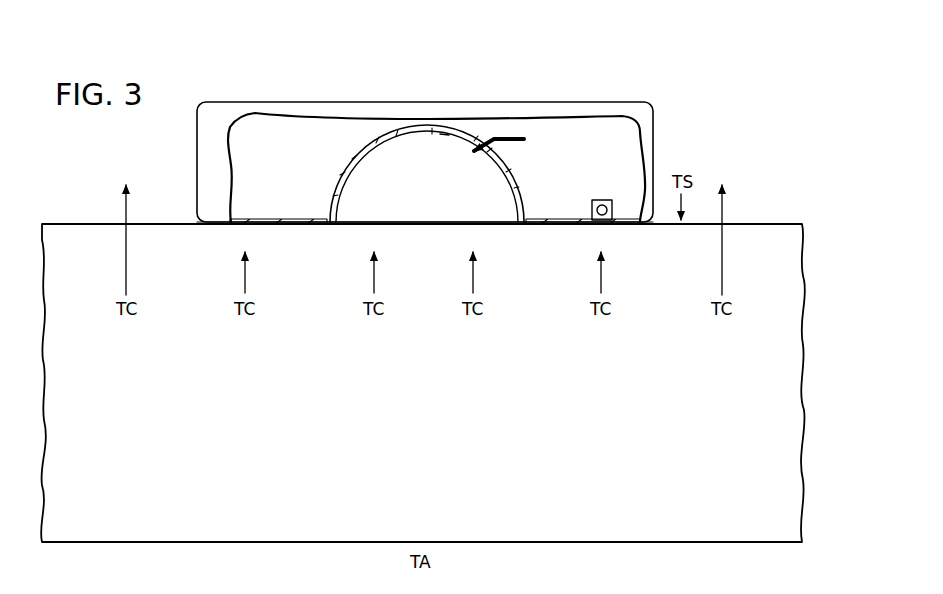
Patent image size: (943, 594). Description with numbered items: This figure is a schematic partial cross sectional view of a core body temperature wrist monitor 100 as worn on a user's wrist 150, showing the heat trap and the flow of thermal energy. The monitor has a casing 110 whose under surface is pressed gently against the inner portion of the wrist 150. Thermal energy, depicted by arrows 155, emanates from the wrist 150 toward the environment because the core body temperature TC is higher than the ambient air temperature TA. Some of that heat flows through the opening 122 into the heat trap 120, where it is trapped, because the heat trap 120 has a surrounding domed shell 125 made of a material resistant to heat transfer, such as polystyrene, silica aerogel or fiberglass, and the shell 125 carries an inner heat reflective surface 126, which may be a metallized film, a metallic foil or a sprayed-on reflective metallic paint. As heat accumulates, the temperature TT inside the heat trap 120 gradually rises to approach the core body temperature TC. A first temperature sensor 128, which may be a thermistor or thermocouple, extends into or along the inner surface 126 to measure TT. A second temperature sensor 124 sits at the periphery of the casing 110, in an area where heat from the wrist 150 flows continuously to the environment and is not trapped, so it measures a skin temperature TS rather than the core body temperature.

The core body temperature wrist monitor 100 is at (640, 50).
The casing 110 is at (284, 99).
The heat trap 120 is at (329, 185).
The opening 122 is at (425, 225).
The second temperature sensor 124 is at (603, 199).
The shell 125 is at (350, 166).
The inner heat reflective surface 126 is at (445, 139).
The first temperature sensor 128 is at (517, 138).
The wrist 150 is at (90, 223).
The arrows 155 is at (126, 254).